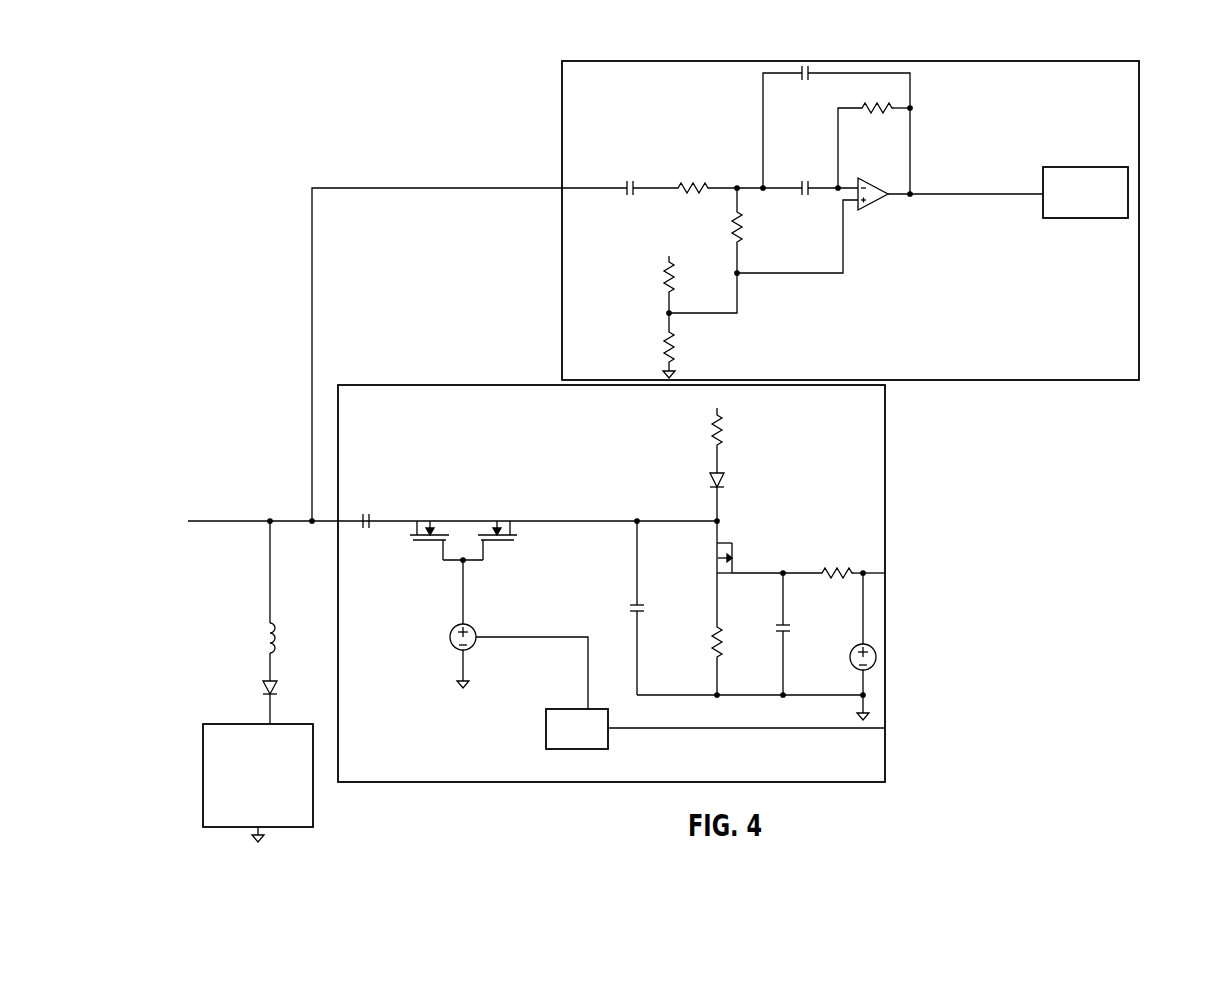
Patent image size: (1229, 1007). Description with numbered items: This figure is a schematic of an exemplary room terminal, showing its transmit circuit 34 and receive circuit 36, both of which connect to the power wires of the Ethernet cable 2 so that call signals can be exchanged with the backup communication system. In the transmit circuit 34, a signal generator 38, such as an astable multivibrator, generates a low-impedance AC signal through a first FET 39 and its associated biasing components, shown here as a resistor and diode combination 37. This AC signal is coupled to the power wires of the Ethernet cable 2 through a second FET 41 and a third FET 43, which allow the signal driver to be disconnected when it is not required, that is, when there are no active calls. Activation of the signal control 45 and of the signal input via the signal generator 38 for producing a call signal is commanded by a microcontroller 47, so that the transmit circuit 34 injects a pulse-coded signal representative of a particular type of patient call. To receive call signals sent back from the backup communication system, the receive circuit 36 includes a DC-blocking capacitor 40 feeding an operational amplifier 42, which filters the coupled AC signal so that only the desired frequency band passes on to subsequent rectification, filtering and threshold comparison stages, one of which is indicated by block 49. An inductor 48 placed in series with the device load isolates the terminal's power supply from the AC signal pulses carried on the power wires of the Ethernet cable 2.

The Ethernet cable 2 is at (234, 513).
The transmit circuit 34 is at (463, 794).
The receive circuit 36 is at (867, 212).
The resistor and diode combination 37 is at (700, 467).
The signal generator 38 is at (852, 641).
The first FET 39 is at (753, 540).
The DC-blocking filter (capacitor) 40 is at (616, 172).
The second FET 41 is at (513, 548).
The operational amplifier 42 is at (905, 182).
The third FET 43 is at (420, 548).
The signal control 45 is at (445, 655).
The microcontroller 47 is at (715, 729).
The inductor 48 is at (256, 623).
The receiver output block 49 is at (1085, 192).